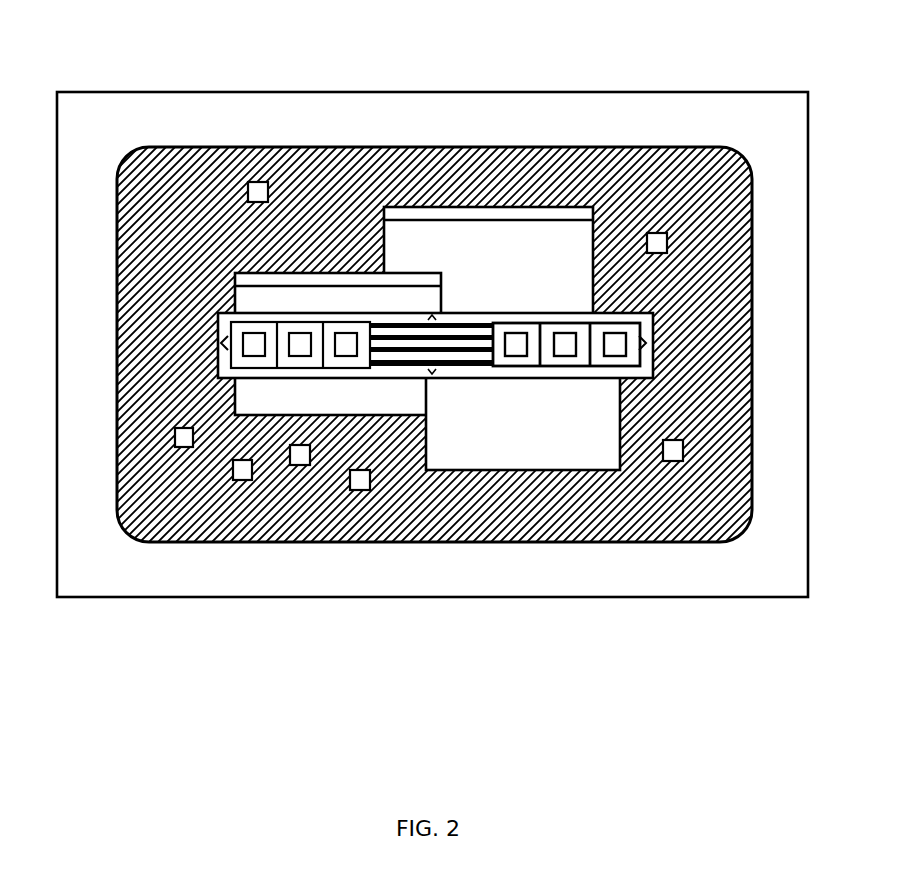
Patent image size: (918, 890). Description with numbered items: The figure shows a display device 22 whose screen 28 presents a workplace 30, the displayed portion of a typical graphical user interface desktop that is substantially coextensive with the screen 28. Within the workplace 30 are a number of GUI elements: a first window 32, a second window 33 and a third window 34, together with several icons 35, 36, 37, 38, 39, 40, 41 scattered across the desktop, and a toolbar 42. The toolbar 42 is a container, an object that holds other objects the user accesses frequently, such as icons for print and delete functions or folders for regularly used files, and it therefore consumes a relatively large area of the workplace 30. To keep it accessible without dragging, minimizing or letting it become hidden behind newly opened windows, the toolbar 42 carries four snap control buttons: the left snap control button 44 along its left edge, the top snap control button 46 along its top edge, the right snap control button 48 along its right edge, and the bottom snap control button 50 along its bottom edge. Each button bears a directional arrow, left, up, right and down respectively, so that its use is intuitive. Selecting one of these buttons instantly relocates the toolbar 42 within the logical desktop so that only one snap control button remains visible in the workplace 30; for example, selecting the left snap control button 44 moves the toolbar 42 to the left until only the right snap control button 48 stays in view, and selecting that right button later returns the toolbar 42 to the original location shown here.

The display device 22 is at (432, 367).
The screen 28 is at (657, 527).
The workplace 30 is at (160, 262).
The first window 32 is at (245, 298).
The second window 33 is at (532, 232).
The third window 34 is at (505, 448).
The icon 35 is at (252, 182).
The icon 36 is at (175, 437).
The icon 37 is at (246, 480).
The icon 38 is at (300, 466).
The icon 39 is at (362, 490).
The icon 40 is at (683, 447).
The icon 41 is at (667, 236).
The toolbar 42 is at (648, 326).
The left snap control button 44 is at (227, 330).
The top snap control button 46 is at (408, 313).
The right snap control button 48 is at (648, 360).
The bottom snap control button 50 is at (482, 373).